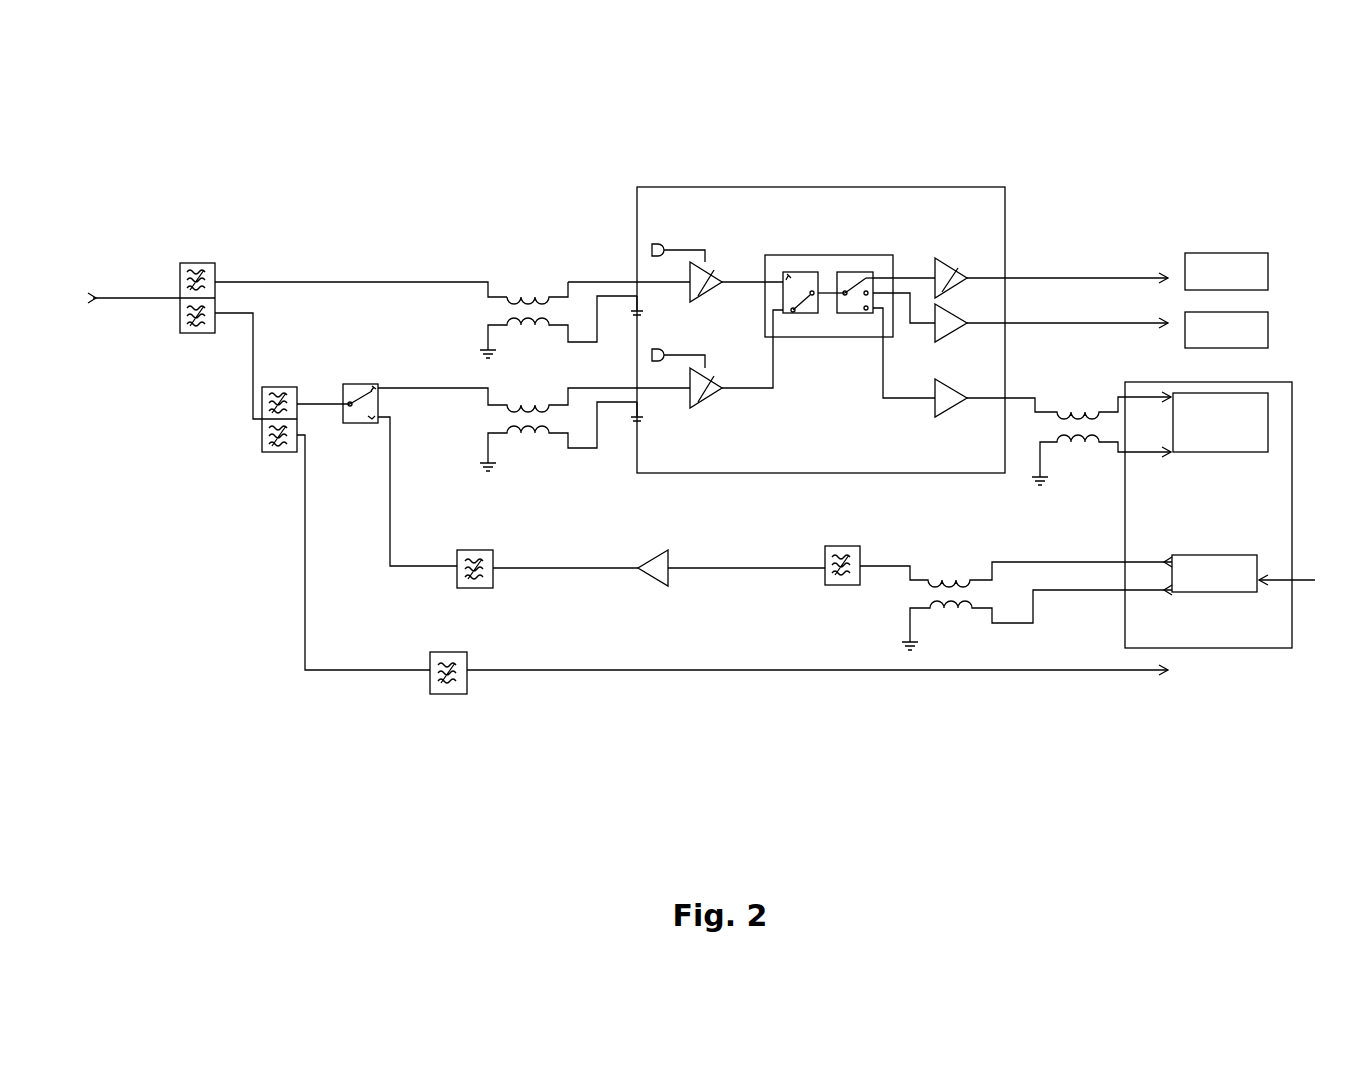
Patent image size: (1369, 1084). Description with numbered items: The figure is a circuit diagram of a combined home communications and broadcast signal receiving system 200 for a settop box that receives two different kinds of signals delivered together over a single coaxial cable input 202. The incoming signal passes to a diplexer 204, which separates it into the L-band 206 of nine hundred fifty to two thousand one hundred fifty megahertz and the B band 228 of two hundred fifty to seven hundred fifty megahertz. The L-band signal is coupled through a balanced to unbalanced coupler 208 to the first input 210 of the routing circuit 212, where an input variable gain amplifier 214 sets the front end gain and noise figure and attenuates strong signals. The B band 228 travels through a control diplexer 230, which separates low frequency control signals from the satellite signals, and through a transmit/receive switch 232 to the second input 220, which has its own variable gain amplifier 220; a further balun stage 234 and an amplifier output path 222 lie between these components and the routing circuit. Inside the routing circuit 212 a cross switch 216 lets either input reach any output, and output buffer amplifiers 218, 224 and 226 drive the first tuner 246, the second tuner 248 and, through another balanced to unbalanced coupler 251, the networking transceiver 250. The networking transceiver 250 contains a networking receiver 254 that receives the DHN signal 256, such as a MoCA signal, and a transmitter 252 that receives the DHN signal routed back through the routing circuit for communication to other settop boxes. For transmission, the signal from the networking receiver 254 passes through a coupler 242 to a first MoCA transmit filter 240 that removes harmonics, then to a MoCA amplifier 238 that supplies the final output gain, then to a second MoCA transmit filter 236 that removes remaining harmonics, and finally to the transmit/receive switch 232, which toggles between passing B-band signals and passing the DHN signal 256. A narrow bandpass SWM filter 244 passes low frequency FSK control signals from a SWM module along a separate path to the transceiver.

The home communications and broadcast signal receiving system 200 is at (258, 705).
The input 202 is at (133, 290).
The diplexer 204 is at (227, 268).
The L-band 206 is at (345, 277).
The balanced to unbalanced coupler 208 is at (532, 277).
The first input 210 is at (627, 277).
The routing circuit 212 is at (826, 182).
The input variable gain amplifier 214 is at (707, 252).
The cross switch 216 is at (798, 252).
The output buffer amplifier 218 is at (952, 253).
The second input 220 is at (652, 392).
The amplifier output line 222 is at (725, 410).
The output buffer amplifier 224 is at (953, 338).
The output buffer amplifier 226 is at (927, 417).
The B band 228 is at (255, 357).
The control diplexer 230 is at (258, 456).
The transmit/receive switch 232 is at (371, 381).
The second balun 234 is at (533, 449).
The second MoCA transmit filter 236 is at (489, 596).
The MoCA amplifier 238 is at (674, 556).
The first MoCA transmit filter 240 is at (829, 586).
The coupler 242 is at (948, 561).
The SWM filter 244 is at (452, 701).
The first tuner 246 is at (1117, 271).
The second tuner 248 is at (1117, 330).
The networking transceiver 250 is at (1295, 427).
The balanced to unbalanced coupler 251 is at (1078, 457).
The transmitter 252 is at (1220, 422).
The networking receiver 254 is at (1214, 573).
The DHN signal 256 is at (1292, 566).